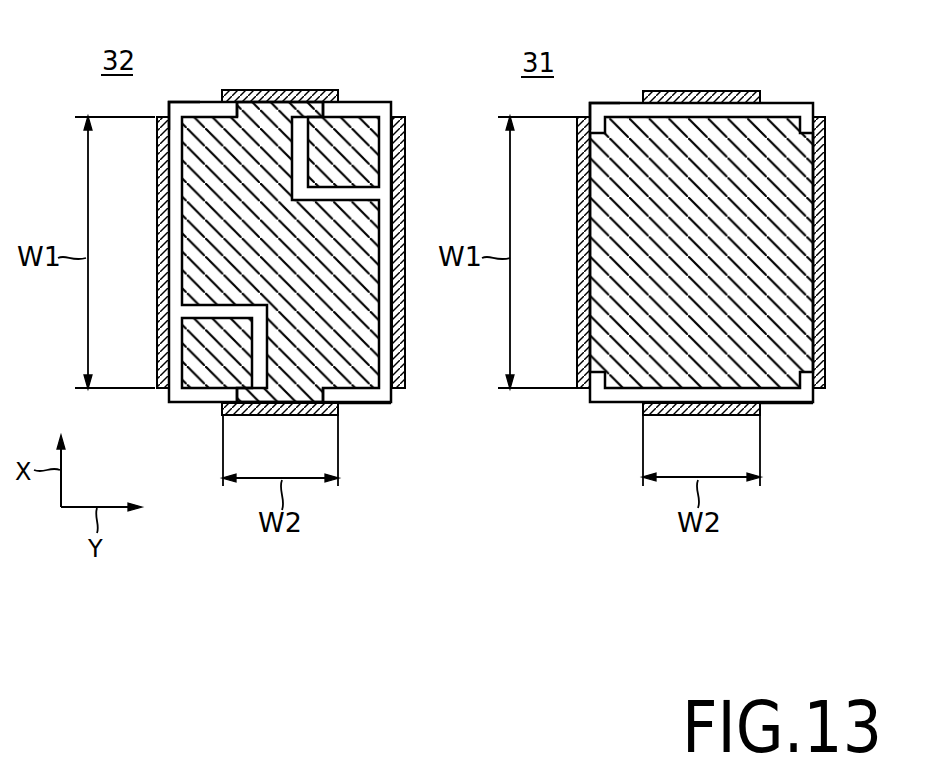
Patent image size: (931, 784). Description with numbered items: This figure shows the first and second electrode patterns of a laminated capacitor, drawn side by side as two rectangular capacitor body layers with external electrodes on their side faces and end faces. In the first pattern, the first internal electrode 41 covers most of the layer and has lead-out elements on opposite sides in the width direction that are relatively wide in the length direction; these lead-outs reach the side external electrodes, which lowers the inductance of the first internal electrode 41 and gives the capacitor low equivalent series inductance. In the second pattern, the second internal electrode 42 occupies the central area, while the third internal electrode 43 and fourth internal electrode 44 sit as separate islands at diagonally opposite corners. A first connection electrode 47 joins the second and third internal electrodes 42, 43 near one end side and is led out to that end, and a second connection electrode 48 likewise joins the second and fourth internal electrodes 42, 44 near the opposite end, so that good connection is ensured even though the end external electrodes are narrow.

The first internal electrode 41 is at (620, 346).
The second internal electrode 42 is at (370, 293).
The third internal electrode 43 is at (198, 346).
The fourth internal electrode 44 is at (369, 152).
The first connection electrode 47 is at (288, 398).
The second connection electrode 48 is at (272, 110).